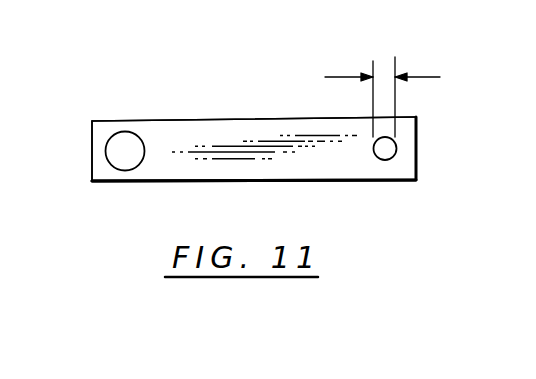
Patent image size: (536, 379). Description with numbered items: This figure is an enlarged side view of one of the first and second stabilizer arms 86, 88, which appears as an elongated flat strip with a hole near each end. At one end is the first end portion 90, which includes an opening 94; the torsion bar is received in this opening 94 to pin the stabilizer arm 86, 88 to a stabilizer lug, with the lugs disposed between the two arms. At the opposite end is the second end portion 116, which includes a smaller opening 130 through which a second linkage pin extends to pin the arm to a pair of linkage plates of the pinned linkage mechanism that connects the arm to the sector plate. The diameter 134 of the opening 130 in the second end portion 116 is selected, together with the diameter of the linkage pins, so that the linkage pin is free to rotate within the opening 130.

The first stabilizer arm 86 is at (183, 119).
The second stabilizer arm 88 is at (254, 98).
The first end portion 90 is at (98, 120).
The opening 94 is at (122, 166).
The opening 130 is at (381, 157).
The second end portion 116 is at (404, 183).
The diameter 134 is at (337, 76).